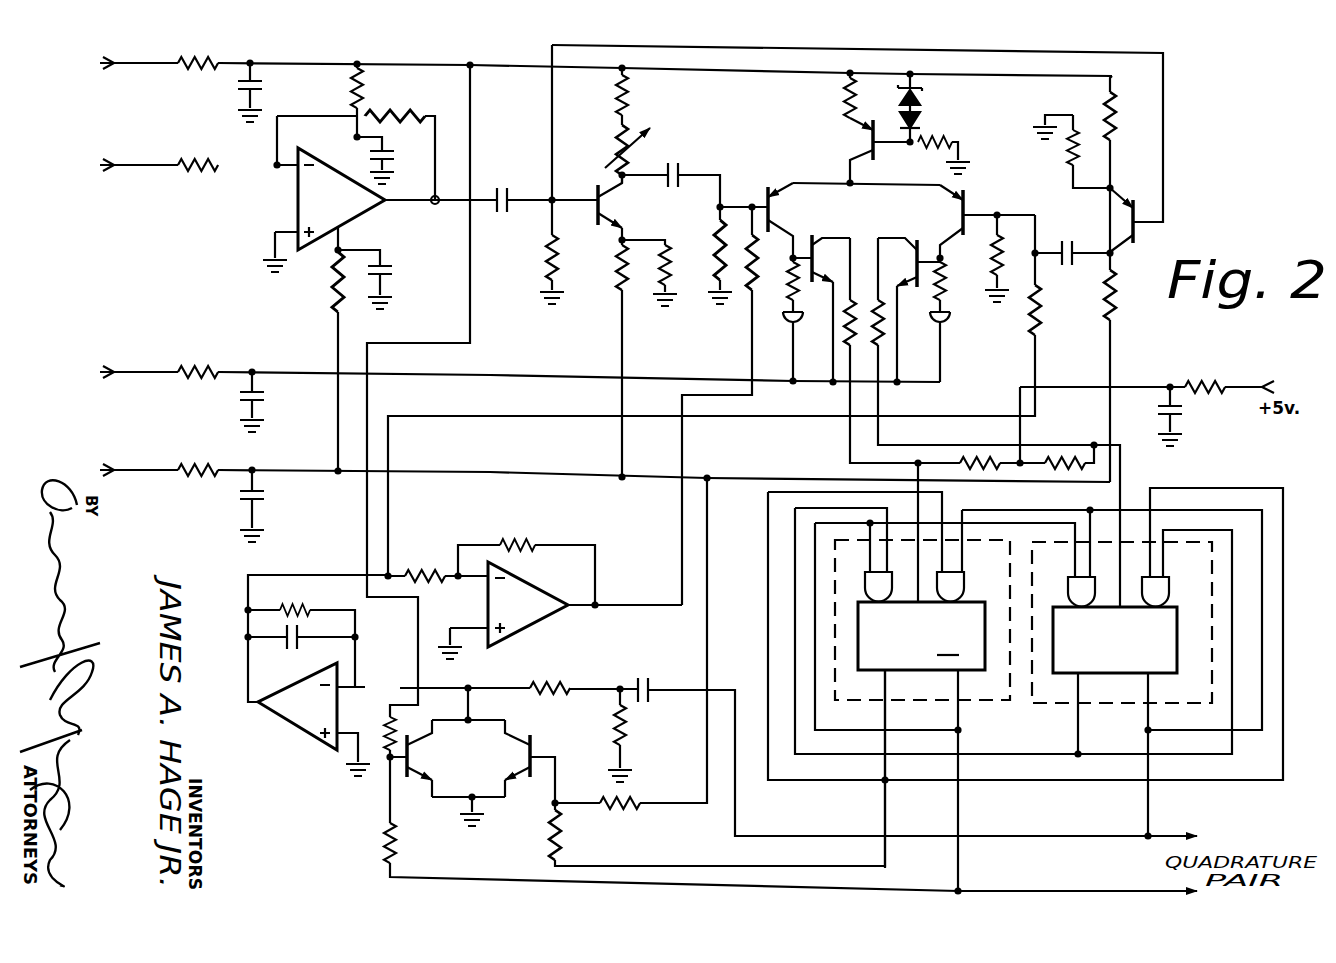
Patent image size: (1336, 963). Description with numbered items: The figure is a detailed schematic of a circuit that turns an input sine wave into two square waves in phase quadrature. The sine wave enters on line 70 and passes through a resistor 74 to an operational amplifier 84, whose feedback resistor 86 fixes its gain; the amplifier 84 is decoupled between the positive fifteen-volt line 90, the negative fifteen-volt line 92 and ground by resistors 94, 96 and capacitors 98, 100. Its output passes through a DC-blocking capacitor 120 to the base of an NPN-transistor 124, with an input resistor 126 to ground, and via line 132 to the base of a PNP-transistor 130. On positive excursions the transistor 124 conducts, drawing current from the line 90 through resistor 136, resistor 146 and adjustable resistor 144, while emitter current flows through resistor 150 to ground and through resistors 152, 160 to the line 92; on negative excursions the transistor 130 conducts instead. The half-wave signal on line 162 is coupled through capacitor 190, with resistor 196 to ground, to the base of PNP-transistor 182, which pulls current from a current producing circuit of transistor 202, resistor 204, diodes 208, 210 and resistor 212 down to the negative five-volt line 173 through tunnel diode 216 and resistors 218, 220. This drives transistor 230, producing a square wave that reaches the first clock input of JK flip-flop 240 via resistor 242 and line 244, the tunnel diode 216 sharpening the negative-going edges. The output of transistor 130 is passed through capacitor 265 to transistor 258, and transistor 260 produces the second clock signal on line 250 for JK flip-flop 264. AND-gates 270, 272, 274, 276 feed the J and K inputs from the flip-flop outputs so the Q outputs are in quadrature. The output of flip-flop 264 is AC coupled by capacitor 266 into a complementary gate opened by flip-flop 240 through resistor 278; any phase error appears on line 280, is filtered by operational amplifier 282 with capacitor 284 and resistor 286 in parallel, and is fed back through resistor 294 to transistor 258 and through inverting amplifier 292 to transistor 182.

The line 70 is at (112, 172).
The resistor 74 is at (180, 170).
The operational amplifier 84 is at (362, 214).
The resistor 86 is at (420, 106).
The positive 15-volt line 90 is at (288, 63).
The negative 15-volt line 92 is at (530, 470).
The resistor 94 is at (350, 92).
The resistor 96 is at (332, 296).
The capacitor 98 is at (370, 153).
The capacitor 100 is at (394, 272).
The capacitor 120 is at (505, 190).
The NPN-transistor 124 is at (598, 192).
The resistor 126 is at (545, 260).
The PNP-transistor 130 is at (1150, 229).
The line 132 is at (1168, 90).
The resistor 136 is at (205, 48).
The adjustable resistor 144 is at (657, 146).
The resistor 146 is at (634, 96).
The resistor 150 is at (680, 230).
The resistor 152 is at (615, 292).
The resistor 160 is at (202, 467).
The line 162 is at (782, 195).
The negative 5-volt line 173 is at (550, 376).
The PNP-transistor 182 is at (780, 230).
The capacitor 190 is at (680, 172).
The resistor 196 is at (720, 262).
The transistor 202 is at (860, 142).
The resistor 204 is at (848, 102).
The diode 208 is at (922, 82).
The diode 210 is at (928, 100).
The resistor 212 is at (935, 141).
The tunnel diode 216 is at (788, 330).
The resistor 218 is at (797, 292).
The resistor 220 is at (200, 370).
The transistor 230 is at (808, 242).
The JK flip-flop 240 is at (958, 647).
The resistor 242 is at (848, 386).
The line 244 is at (848, 463).
The line 250 is at (750, 305).
The transistor 258 is at (975, 210).
The transistor 260 is at (920, 246).
The JK flip-flop 264 is at (1136, 655).
The capacitor 265 is at (1082, 236).
The capacitor 266 is at (660, 680).
The AND-gate 270 is at (566, 688).
The AND-gate 272 is at (400, 772).
The AND-gate 274 is at (534, 752).
The AND-gate 276 is at (386, 847).
The resistor 278 is at (550, 836).
The line 280 is at (466, 690).
The operational amplifier 282 is at (307, 718).
The capacitor 284 is at (284, 648).
The resistor 286 is at (312, 603).
The inverting amplifier 292 is at (522, 600).
The resistor 294 is at (1040, 332).